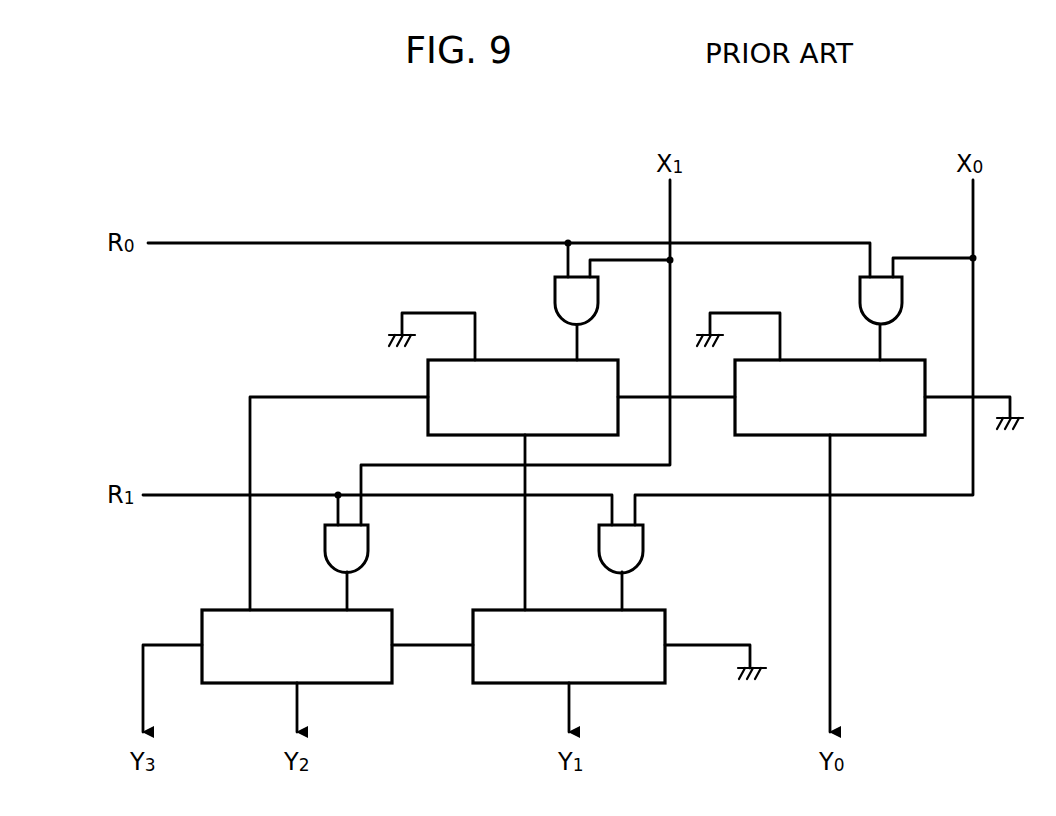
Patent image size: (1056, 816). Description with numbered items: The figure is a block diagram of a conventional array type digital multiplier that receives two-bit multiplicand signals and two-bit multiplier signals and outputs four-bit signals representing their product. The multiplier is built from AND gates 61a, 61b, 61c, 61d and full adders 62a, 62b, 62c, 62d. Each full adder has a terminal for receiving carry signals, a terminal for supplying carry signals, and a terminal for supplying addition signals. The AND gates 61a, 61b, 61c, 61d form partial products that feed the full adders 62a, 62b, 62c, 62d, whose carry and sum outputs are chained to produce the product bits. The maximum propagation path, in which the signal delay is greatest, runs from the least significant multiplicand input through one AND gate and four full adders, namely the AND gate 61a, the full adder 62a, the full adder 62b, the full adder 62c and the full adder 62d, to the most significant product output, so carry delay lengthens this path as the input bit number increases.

The AND gate 61a is at (870, 296).
The AND gate 61b is at (566, 296).
The AND gate 61c is at (627, 556).
The AND gate 61d is at (357, 553).
The full adder 62a is at (893, 370).
The full adder 62b is at (618, 357).
The full adder 62c is at (647, 683).
The full adder 62d is at (367, 683).